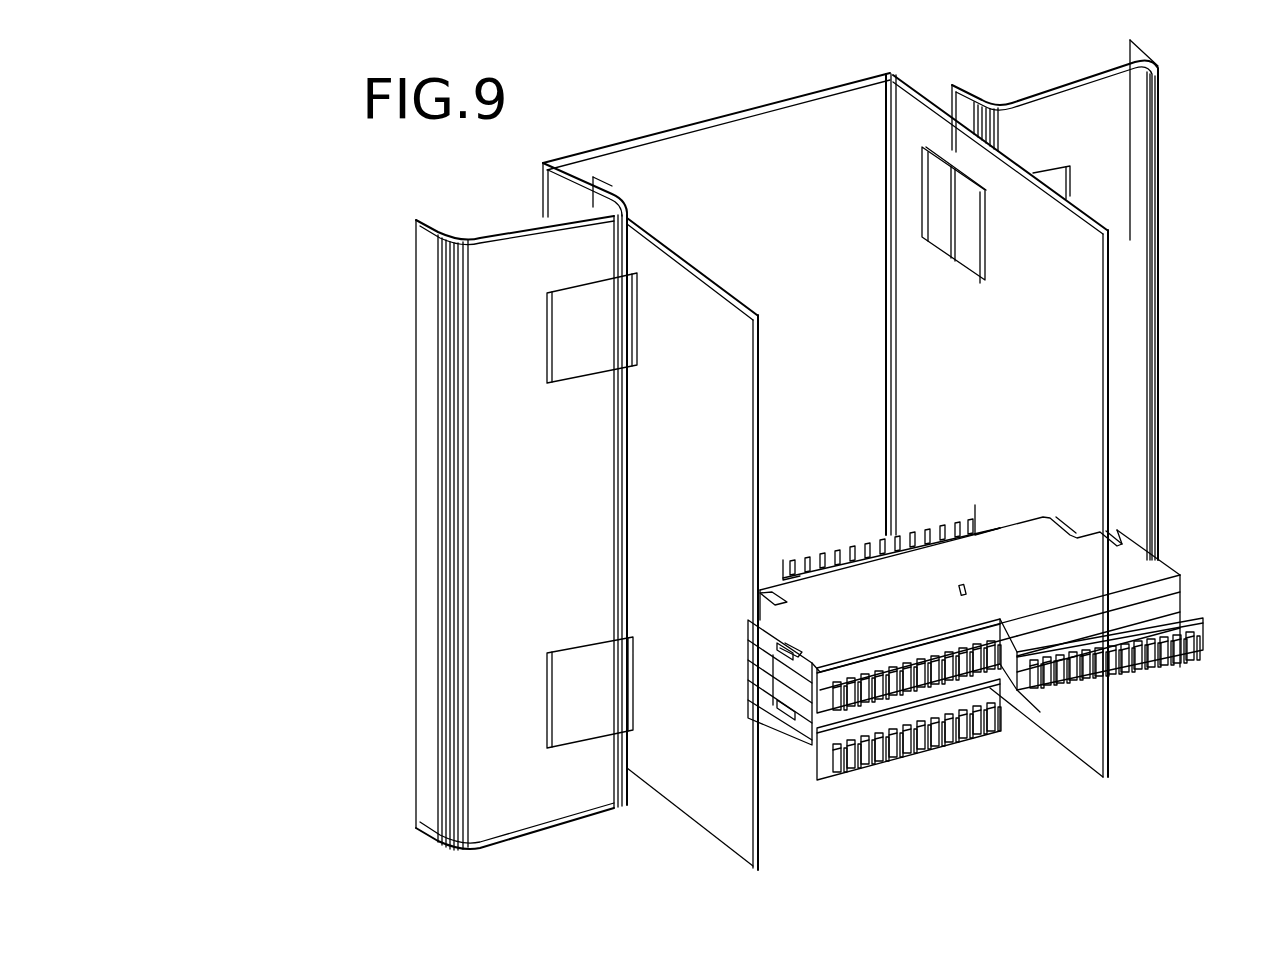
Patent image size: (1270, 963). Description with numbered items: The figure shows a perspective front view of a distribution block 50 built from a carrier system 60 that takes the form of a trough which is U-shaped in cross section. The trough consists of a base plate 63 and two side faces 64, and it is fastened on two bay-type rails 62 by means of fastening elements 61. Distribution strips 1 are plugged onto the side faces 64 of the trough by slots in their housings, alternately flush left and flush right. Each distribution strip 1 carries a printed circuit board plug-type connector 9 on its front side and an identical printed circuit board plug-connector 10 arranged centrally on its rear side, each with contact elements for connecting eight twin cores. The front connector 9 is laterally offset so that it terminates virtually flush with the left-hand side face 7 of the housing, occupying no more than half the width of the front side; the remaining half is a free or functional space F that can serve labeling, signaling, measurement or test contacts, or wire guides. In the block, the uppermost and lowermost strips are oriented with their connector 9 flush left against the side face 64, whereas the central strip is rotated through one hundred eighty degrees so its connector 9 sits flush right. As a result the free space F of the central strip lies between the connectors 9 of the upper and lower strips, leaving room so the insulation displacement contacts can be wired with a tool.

The distribution strip 1 is at (1130, 578).
The left-hand side face 7 is at (775, 718).
The printed circuit board plug-type connector 9 is at (833, 700).
The printed circuit board plug-connector 10 is at (868, 543).
The distribution block 50 is at (1167, 697).
The carrier system 60 is at (693, 187).
The fastening elements 61 is at (560, 303).
The bay-type rails 62 is at (530, 500).
The base plate 63 is at (833, 125).
The side faces 64 is at (648, 431).
The free space F is at (1163, 605).